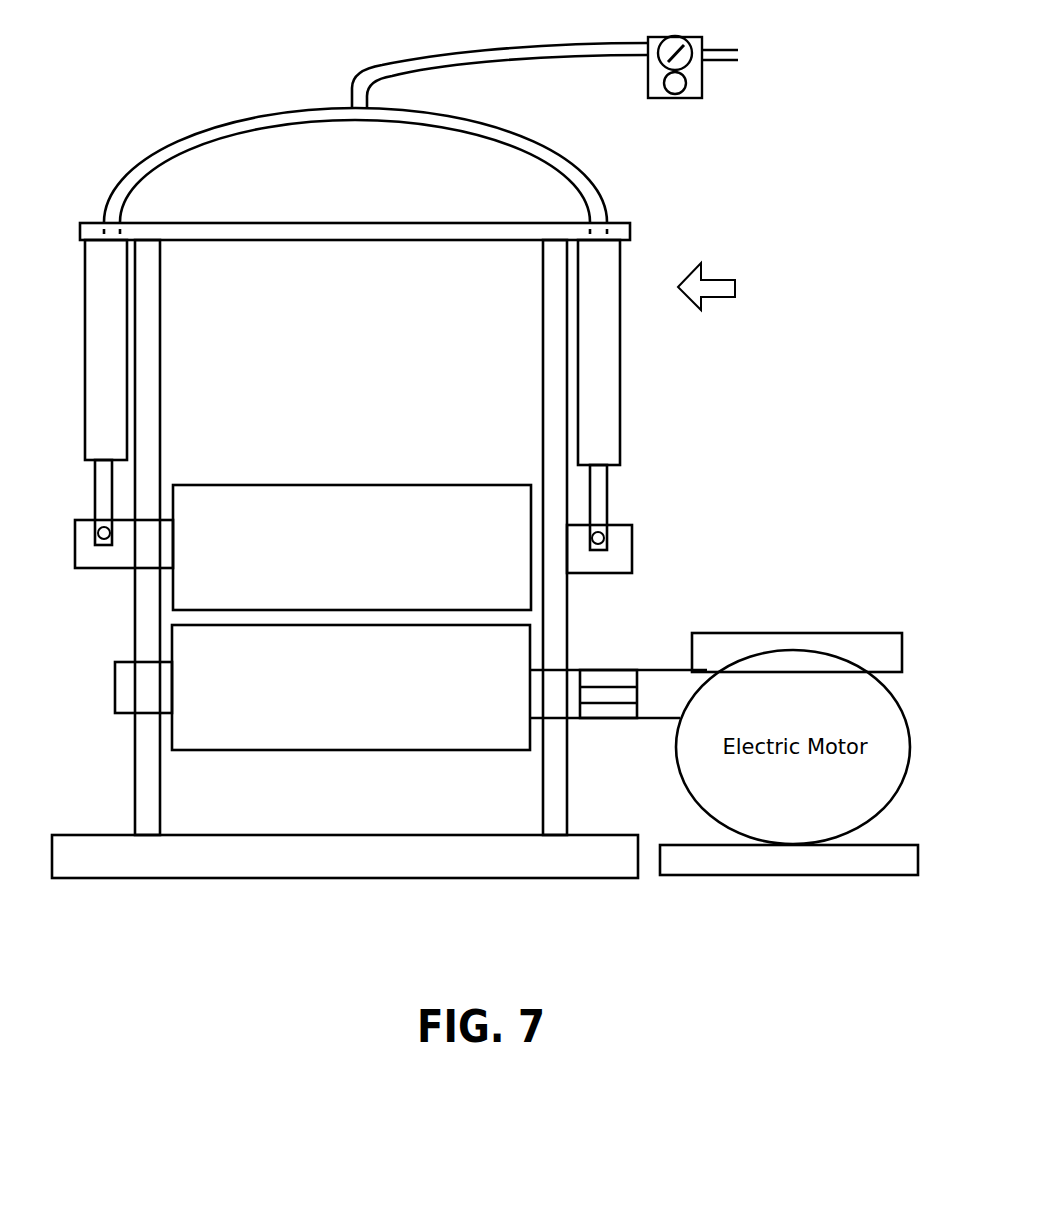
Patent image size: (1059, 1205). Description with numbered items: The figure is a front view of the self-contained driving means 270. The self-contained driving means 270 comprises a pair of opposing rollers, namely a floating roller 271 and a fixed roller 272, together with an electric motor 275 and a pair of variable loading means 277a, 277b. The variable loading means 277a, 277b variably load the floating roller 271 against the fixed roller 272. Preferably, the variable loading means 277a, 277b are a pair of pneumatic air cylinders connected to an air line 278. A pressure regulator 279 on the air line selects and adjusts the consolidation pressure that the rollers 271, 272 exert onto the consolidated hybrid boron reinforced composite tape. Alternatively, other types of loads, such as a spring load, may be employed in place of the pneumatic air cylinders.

The self-contained driving means 270 is at (731, 286).
The floating roller 271 is at (293, 485).
The fixed roller 272 is at (447, 750).
The electric motor 275 is at (770, 633).
The variable loading means 277a is at (352, 395).
The variable loading means 277b is at (598, 415).
The air line 278 is at (198, 130).
The pressure regulator 279 is at (678, 98).